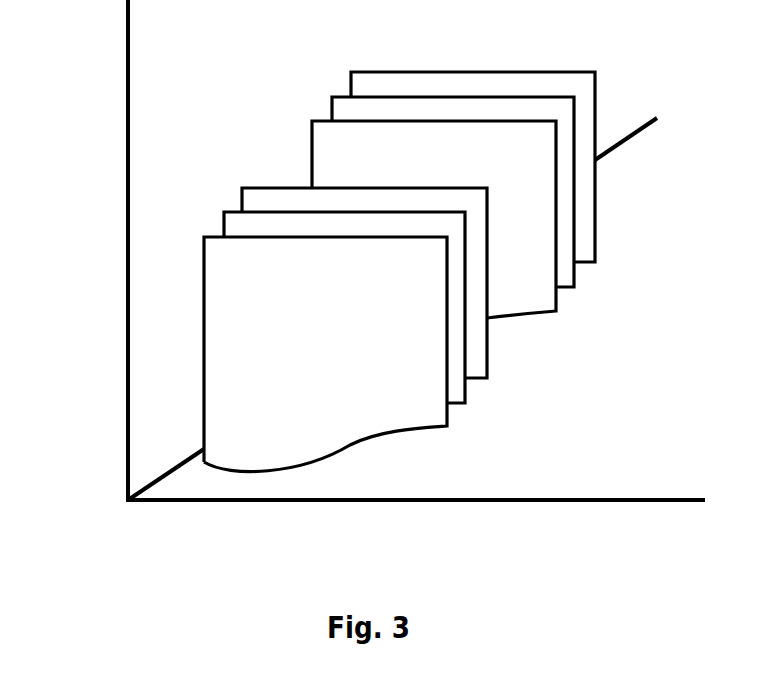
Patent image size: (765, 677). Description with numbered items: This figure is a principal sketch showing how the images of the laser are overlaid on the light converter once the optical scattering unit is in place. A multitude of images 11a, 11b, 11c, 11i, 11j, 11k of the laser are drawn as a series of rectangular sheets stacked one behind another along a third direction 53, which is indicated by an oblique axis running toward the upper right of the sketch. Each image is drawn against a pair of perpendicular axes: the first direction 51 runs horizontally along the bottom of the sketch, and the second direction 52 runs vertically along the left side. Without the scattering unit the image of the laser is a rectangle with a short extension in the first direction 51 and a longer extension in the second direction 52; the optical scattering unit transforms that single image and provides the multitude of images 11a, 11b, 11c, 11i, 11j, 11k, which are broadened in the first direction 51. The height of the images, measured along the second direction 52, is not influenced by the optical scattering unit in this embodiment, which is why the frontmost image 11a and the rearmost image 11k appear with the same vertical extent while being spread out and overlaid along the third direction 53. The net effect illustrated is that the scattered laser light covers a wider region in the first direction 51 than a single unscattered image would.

The image of the laser 11a is at (210, 236).
The image of the laser 11b is at (232, 211).
The image of the laser 11c is at (257, 187).
The image of the laser 11i is at (317, 121).
The image of the laser 11j is at (340, 97).
The image of the laser 11k is at (363, 72).
The first direction 51 is at (611, 502).
The second direction 52 is at (127, 95).
The third direction 53 is at (611, 150).